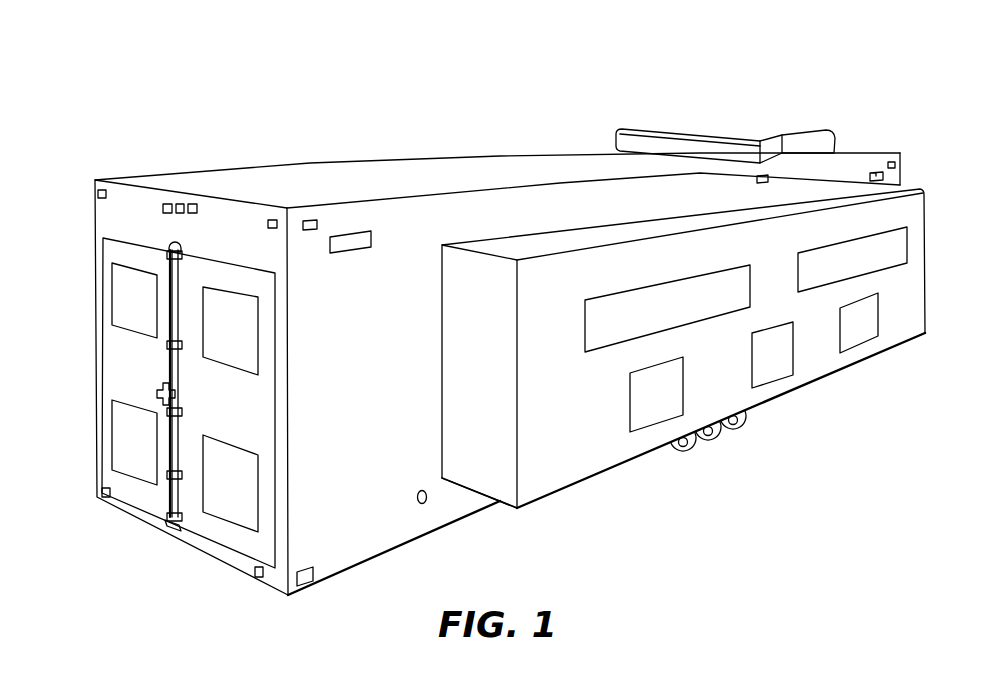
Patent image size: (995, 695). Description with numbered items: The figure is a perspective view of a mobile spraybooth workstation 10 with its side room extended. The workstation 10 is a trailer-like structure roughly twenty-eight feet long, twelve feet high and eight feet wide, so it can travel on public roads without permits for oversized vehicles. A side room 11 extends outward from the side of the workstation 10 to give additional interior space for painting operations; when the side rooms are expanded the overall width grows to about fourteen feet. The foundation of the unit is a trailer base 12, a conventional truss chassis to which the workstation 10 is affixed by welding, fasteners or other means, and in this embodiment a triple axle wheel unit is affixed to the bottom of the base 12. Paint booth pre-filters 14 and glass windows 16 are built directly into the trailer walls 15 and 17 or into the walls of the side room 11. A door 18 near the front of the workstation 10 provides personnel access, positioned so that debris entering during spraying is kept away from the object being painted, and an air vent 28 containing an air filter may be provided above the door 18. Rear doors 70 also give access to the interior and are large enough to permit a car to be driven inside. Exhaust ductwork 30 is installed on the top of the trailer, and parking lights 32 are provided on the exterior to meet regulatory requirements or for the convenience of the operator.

The mobile spraybooth workstation 10 is at (537, 38).
The side room 11 is at (495, 456).
The trailer base 12 is at (718, 442).
The paint booth pre-filters 14 is at (860, 320).
The trailer wall 15 is at (420, 207).
The glass windows 16 is at (893, 246).
The trailer wall 17 is at (240, 168).
The door 18 is at (896, 187).
The air vent 28 is at (876, 170).
The exhaust ductwork 30 is at (750, 132).
The parking lights 32 is at (180, 204).
The rear doors 70 is at (121, 375).